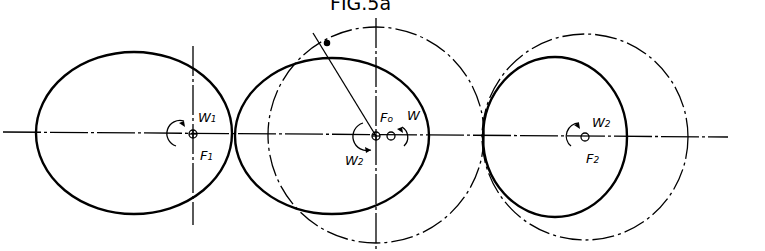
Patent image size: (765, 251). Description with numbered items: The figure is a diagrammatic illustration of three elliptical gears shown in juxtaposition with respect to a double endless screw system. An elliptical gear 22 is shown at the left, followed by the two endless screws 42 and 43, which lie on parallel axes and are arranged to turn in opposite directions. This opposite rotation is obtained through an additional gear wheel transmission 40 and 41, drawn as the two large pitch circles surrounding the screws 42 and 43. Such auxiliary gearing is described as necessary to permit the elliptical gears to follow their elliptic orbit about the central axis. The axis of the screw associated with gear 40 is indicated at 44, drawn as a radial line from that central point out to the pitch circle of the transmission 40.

The first elliptical cam 22 is at (134, 107).
The gear wheel transmission 40 is at (428, 40).
The gear wheel transmission 41 is at (658, 63).
The endless screw 42 is at (413, 88).
The endless screw 43 is at (626, 121).
The axis of screw 44 is at (334, 77).